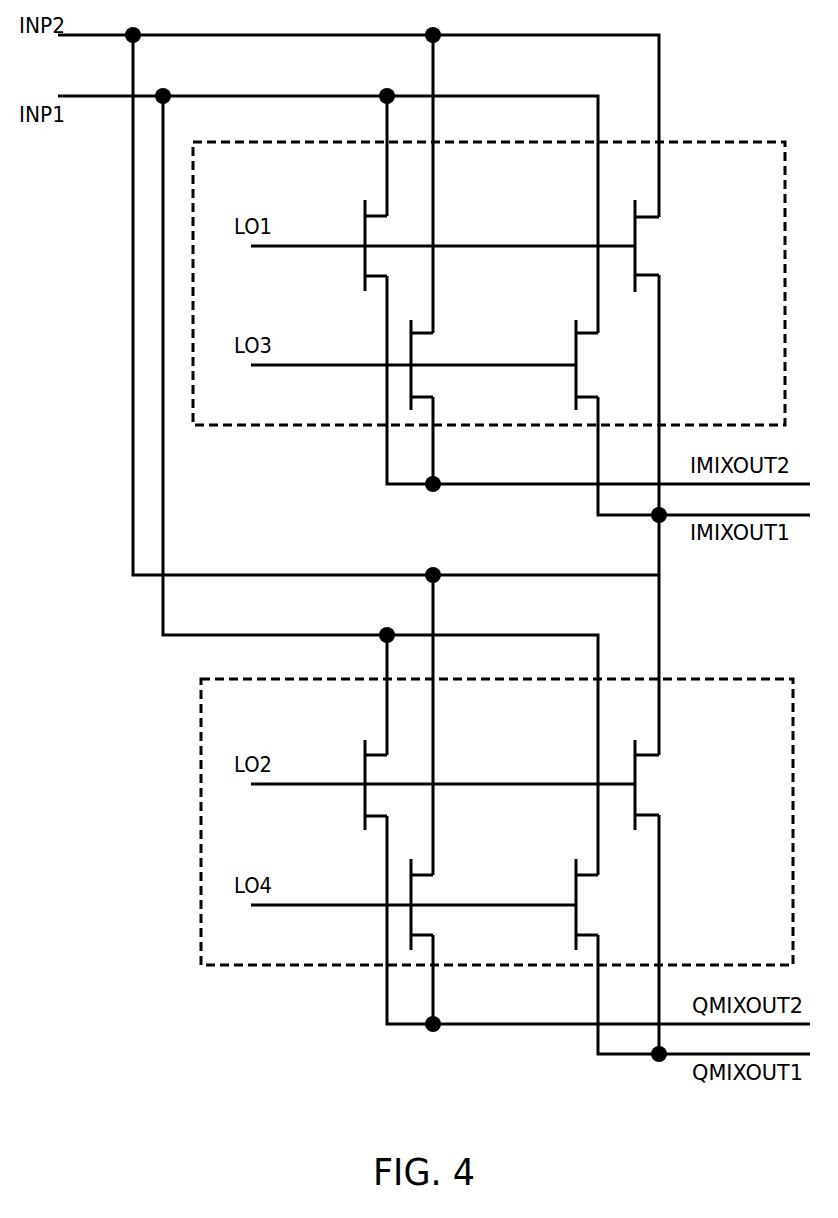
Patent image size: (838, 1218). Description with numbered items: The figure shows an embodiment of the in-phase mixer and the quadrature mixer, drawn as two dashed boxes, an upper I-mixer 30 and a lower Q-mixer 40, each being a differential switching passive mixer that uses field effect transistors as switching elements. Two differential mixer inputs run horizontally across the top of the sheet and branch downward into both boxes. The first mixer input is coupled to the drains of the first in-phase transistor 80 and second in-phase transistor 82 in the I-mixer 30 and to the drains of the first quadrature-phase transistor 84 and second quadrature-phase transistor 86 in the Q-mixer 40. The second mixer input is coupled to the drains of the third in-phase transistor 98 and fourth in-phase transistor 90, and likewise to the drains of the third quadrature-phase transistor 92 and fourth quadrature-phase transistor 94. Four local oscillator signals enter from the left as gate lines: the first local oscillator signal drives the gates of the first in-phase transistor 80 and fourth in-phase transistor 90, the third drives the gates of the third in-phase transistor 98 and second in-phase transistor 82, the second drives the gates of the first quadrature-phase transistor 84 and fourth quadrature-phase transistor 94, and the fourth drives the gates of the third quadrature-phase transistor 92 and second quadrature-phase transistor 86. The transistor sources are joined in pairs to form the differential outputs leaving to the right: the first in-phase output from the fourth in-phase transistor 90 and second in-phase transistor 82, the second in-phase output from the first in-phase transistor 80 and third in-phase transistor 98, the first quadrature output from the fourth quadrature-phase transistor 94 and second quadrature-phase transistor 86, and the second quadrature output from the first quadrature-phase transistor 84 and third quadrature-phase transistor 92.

The I-mixer 30 is at (762, 186).
The Q-mixer 40 is at (769, 726).
The first in-phase transistor 80 is at (351, 245).
The second in-phase transistor 82 is at (562, 365).
The first quadrature-phase transistor 84 is at (351, 785).
The second quadrature-phase transistor 86 is at (562, 904).
The fourth in-phase transistor 90 is at (668, 246).
The third quadrature-phase transistor 92 is at (443, 904).
The fourth quadrature-phase transistor 94 is at (668, 785).
The third in-phase transistor 98 is at (443, 365).